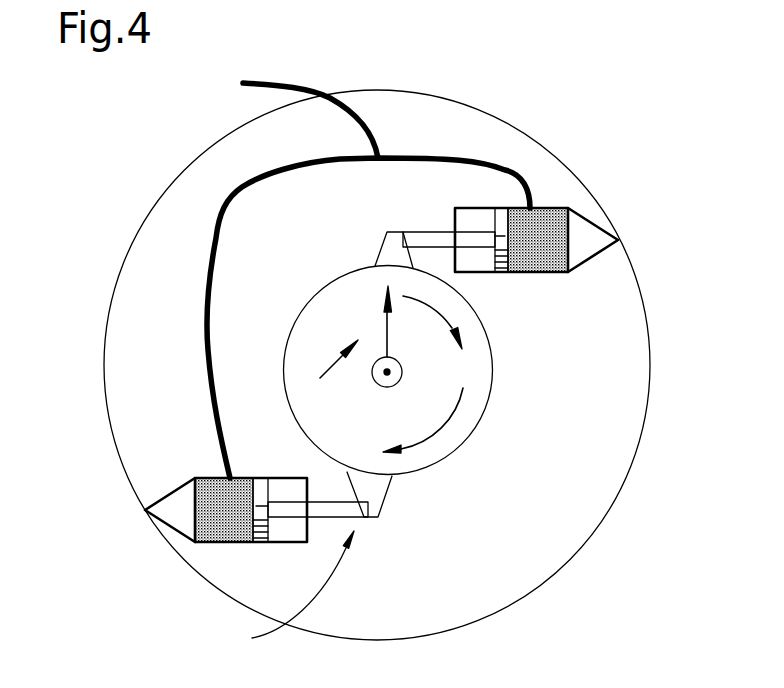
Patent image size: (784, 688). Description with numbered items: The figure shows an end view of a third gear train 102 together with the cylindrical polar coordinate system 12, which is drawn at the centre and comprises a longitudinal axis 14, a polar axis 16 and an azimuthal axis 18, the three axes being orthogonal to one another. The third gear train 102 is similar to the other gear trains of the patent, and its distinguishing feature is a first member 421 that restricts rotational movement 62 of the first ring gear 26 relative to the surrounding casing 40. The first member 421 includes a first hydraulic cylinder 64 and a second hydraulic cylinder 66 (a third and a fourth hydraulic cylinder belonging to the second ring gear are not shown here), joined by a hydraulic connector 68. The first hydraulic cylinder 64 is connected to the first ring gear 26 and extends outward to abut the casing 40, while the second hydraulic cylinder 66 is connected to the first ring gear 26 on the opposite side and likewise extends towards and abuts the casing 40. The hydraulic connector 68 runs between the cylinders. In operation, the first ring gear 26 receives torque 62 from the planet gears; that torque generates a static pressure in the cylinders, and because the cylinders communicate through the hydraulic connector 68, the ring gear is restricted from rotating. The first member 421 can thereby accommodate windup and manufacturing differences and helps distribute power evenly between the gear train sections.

The cylindrical polar coordinate system 12 is at (325, 372).
The longitudinal axis 14 is at (380, 387).
The polar axis 16 is at (385, 332).
The azimuthal axis 18 is at (427, 310).
The first ring gear 26 is at (463, 445).
The casing 40 is at (648, 397).
The rotational movement 62 is at (417, 442).
The first hydraulic cylinder 64 is at (530, 273).
The second hydraulic cylinder 66 is at (230, 545).
The hydraulic connector 68 is at (312, 86).
The third gear train 102 is at (548, 105).
The first member 421 is at (282, 592).